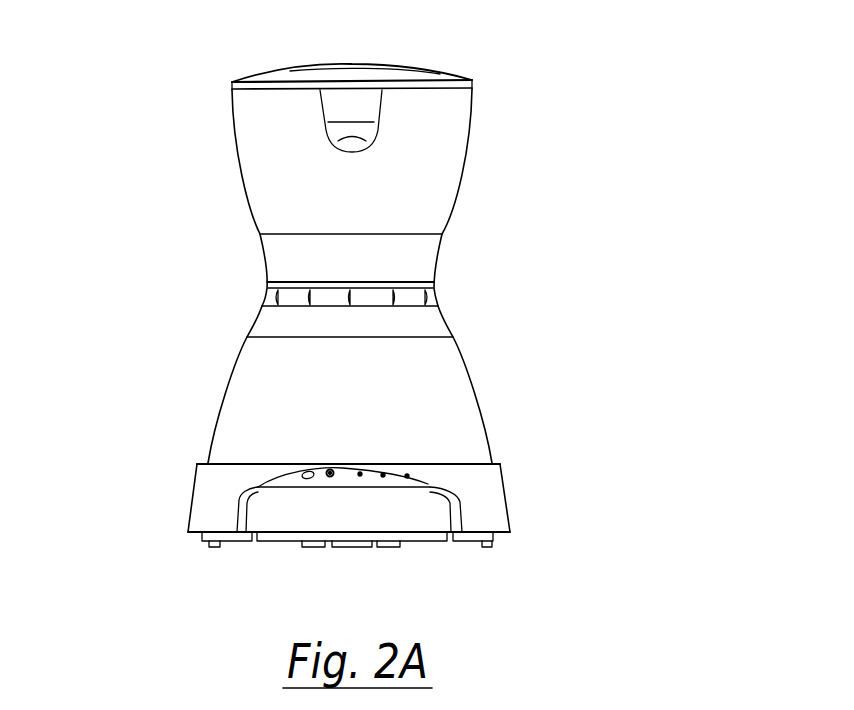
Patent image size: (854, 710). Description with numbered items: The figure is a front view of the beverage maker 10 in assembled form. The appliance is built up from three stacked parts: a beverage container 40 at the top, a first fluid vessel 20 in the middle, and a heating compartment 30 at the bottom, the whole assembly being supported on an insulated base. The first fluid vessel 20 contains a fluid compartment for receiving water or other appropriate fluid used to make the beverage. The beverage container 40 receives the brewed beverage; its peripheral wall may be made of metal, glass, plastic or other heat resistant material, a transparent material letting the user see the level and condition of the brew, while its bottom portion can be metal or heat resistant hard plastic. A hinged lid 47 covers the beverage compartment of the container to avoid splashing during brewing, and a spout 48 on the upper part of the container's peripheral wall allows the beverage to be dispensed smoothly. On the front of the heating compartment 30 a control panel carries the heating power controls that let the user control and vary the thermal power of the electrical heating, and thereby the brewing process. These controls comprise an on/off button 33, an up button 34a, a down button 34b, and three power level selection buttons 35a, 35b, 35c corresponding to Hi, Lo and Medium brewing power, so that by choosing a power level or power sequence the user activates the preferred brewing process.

The beverage maker 10 is at (391, 312).
The beverage container 40 is at (421, 124).
The hinged lid 47 is at (423, 78).
The spout 48 is at (345, 110).
The first fluid vessel 20 is at (525, 383).
The heating compartment 30 is at (390, 508).
The on/off button 33 is at (292, 464).
The up button 34a is at (327, 460).
The down button 34b is at (327, 487).
The power level selection button 35a is at (358, 477).
The power level selection button 35b is at (383, 478).
The power level selection button 35c is at (406, 479).